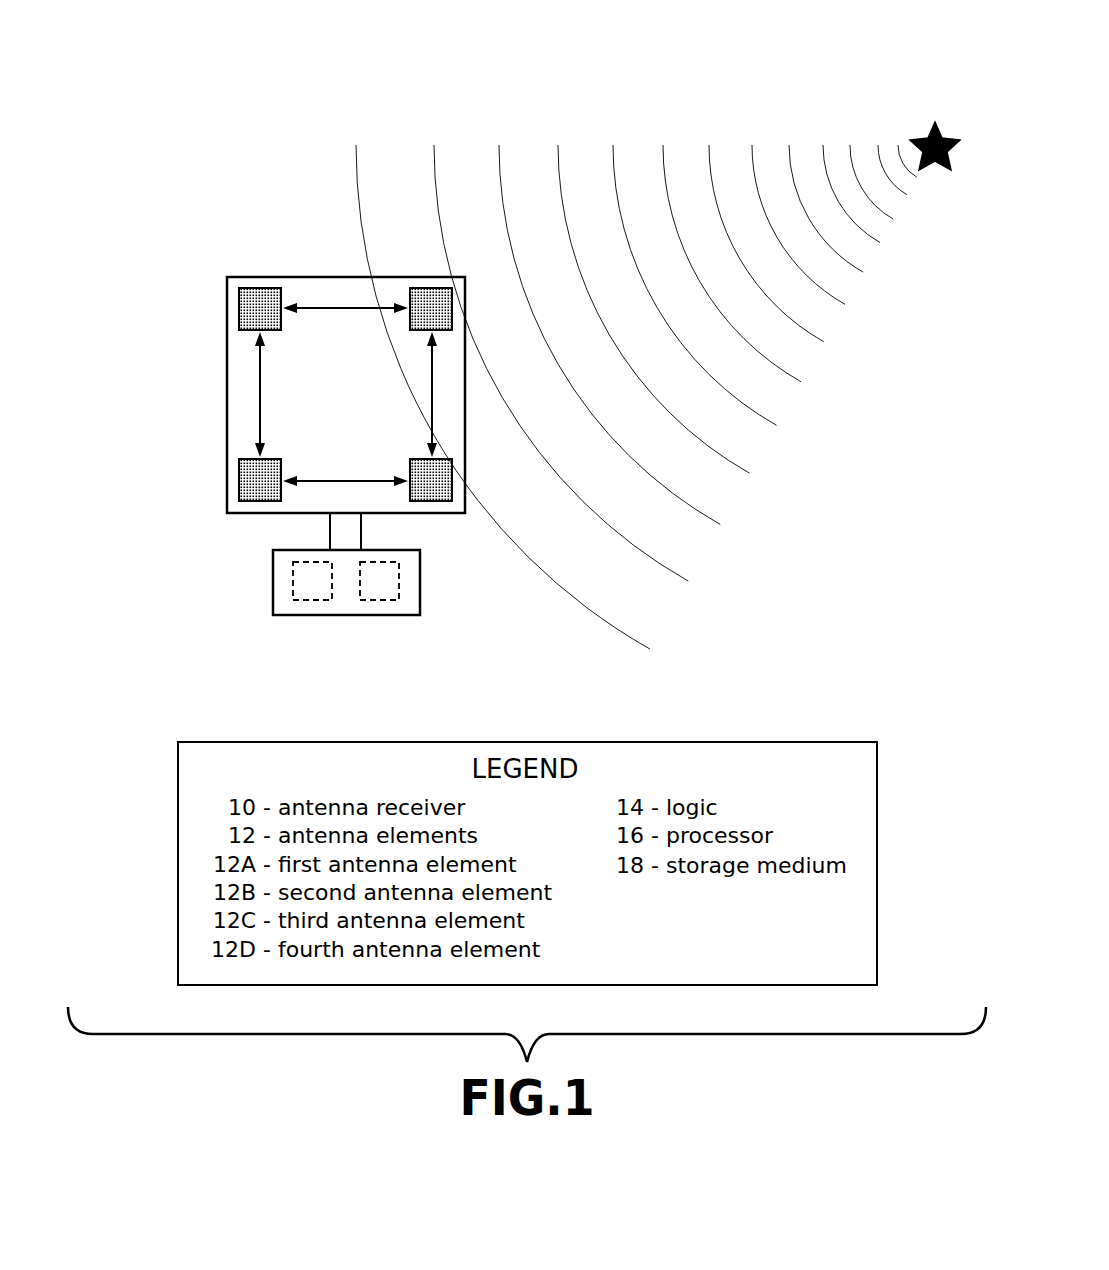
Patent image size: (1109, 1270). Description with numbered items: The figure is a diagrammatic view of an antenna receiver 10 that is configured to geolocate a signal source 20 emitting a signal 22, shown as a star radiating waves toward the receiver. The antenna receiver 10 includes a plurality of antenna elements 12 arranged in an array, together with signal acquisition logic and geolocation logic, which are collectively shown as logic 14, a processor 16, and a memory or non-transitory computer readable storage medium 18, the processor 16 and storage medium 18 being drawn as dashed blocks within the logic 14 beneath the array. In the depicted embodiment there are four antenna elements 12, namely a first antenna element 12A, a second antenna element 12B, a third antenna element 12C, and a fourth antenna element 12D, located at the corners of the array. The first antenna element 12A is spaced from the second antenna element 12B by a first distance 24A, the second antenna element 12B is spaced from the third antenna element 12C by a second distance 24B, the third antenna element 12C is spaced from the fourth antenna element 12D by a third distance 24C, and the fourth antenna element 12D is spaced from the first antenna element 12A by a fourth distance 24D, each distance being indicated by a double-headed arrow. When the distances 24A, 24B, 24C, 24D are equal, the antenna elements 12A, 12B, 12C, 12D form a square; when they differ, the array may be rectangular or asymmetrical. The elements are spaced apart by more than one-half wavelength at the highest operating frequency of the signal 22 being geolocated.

The antenna receiver 10 is at (302, 274).
The antenna elements 12 is at (343, 394).
The first antenna element 12A is at (239, 304).
The second antenna element 12B is at (456, 304).
The third antenna element 12C is at (456, 477).
The fourth antenna element 12D is at (239, 477).
The signal acquisition logic and geolocation logic 14 is at (272, 579).
The processor 16 is at (313, 590).
The non-transitory computer readable storage medium 18 is at (380, 590).
The signal source 20 is at (920, 126).
The signal 22 is at (612, 160).
The first distance 24A is at (347, 311).
The second distance 24B is at (431, 410).
The third distance 24C is at (343, 479).
The fourth distance 24D is at (261, 375).